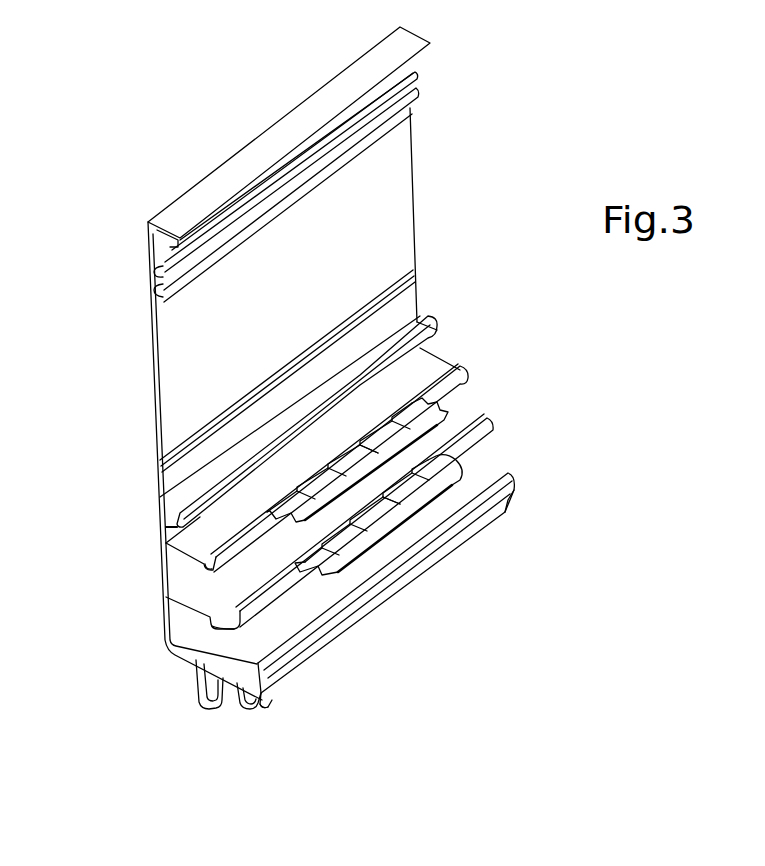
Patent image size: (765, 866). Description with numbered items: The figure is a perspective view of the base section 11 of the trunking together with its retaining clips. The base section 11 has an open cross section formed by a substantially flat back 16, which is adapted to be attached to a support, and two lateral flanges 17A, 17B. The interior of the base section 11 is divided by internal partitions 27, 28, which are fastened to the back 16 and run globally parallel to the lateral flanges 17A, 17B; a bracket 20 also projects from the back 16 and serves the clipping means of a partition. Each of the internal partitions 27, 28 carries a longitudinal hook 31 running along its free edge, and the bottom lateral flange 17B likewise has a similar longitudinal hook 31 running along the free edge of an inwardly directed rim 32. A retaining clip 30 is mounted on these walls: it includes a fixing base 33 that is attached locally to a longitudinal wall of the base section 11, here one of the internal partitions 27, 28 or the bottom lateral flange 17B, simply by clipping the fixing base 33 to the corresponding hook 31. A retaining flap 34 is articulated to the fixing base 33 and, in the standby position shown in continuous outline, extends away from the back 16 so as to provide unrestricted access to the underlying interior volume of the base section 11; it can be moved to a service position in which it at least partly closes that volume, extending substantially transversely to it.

The base section 11 is at (119, 433).
The back 16 is at (138, 341).
The lateral flange 17A is at (196, 186).
The lateral flange 17B is at (220, 692).
The bracket 20 is at (183, 521).
The internal partition 27 is at (192, 620).
The internal partition 28 is at (183, 565).
The retaining clip 30 is at (410, 470).
The longitudinal hook 31 is at (207, 566).
The inwardly directed rim 32 is at (515, 484).
The fixing base 33 is at (268, 508).
The retaining flap 34 is at (443, 415).